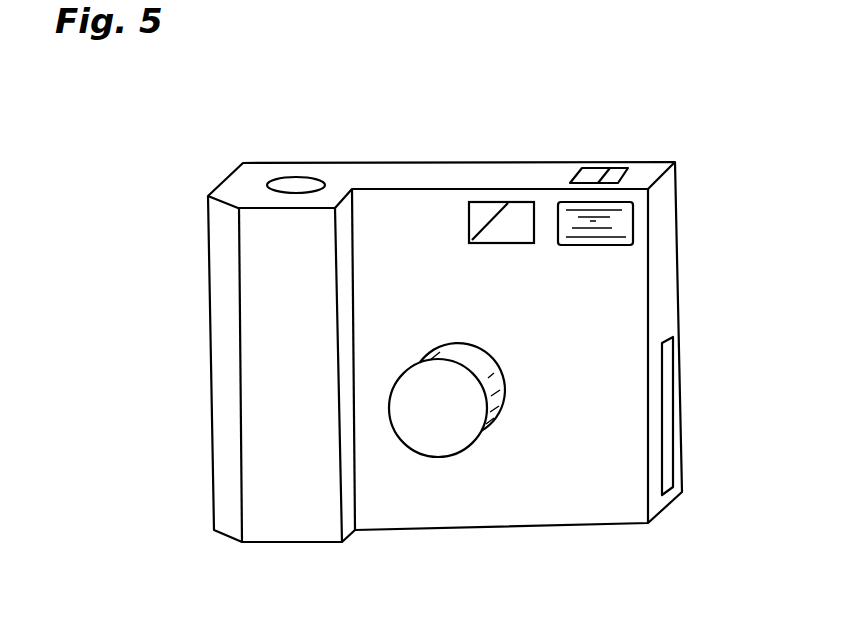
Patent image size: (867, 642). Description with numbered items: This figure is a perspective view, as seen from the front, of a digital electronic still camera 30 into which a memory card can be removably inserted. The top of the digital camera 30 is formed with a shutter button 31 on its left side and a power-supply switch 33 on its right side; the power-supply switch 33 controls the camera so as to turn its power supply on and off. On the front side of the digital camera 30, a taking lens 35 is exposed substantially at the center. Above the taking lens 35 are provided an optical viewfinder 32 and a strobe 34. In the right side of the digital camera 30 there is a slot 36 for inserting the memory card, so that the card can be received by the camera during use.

The digital electronic still camera 30 is at (637, 110).
The shutter button 31 is at (292, 182).
The optical viewfinder 32 is at (484, 201).
The power-supply switch 33 is at (608, 164).
The strobe 34 is at (622, 224).
The taking lens 35 is at (468, 435).
The slot 36 is at (670, 375).